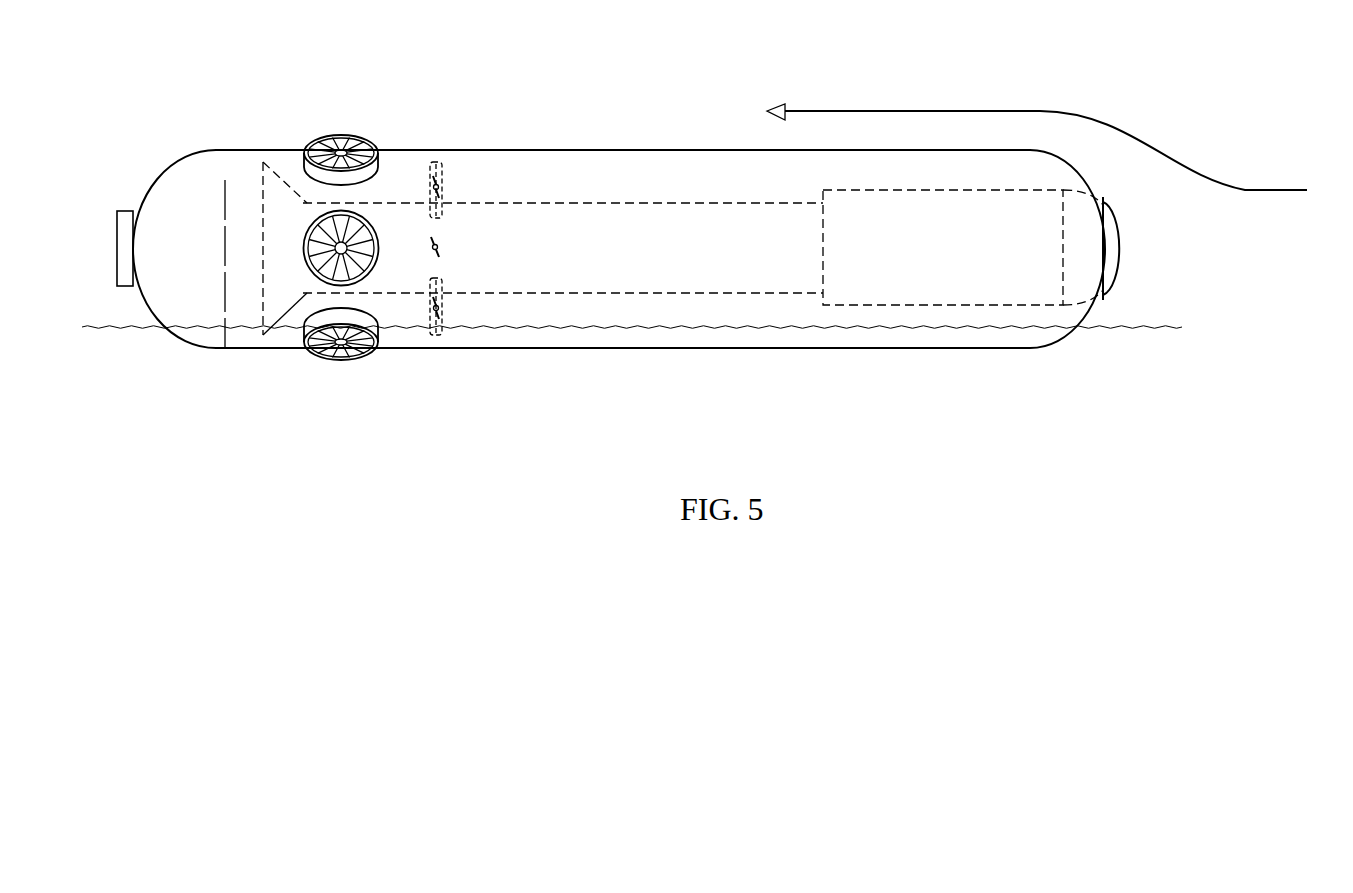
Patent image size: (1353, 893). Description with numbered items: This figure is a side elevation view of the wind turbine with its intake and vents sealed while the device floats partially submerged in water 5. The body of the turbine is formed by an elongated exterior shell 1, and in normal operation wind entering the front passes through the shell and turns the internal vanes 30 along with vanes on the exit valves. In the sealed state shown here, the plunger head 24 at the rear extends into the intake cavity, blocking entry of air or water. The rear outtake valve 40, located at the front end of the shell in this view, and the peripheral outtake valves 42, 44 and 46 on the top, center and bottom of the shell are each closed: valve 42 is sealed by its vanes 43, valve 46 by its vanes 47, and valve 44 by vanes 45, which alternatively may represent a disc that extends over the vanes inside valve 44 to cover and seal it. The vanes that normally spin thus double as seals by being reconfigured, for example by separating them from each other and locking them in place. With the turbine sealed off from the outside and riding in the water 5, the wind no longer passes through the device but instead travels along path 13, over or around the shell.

The exterior shell 1 is at (620, 157).
The water 5 is at (117, 332).
The wind path 13 is at (1047, 113).
The plunger head 24 is at (1117, 257).
The vanes 30 is at (437, 305).
The rear outtake valve 40 is at (127, 235).
The peripheral outtake valve 42 is at (353, 143).
The vanes 43 is at (313, 148).
The peripheral outtake valve 44 is at (310, 205).
The vanes or sealing disc 45 is at (362, 233).
The peripheral outtake valve 46 is at (320, 357).
The vanes 47 is at (348, 350).